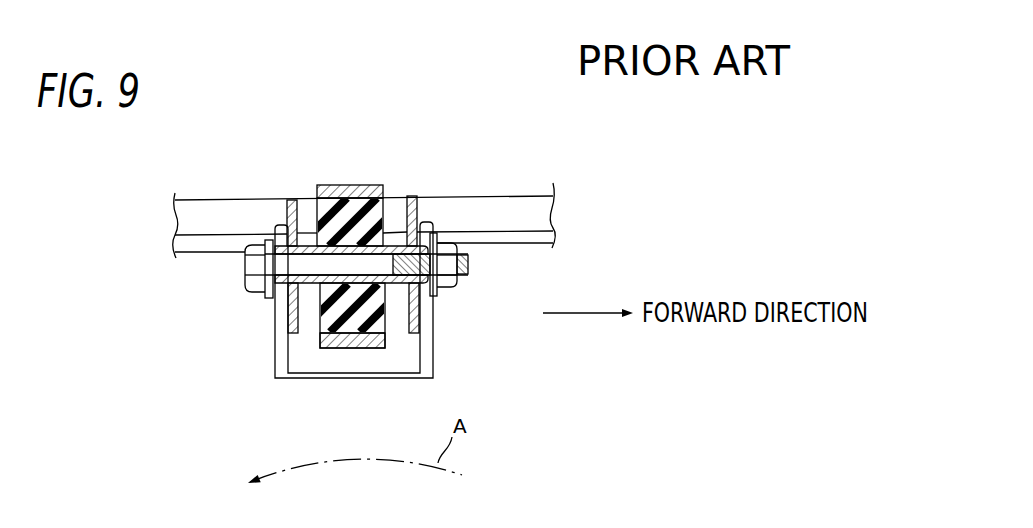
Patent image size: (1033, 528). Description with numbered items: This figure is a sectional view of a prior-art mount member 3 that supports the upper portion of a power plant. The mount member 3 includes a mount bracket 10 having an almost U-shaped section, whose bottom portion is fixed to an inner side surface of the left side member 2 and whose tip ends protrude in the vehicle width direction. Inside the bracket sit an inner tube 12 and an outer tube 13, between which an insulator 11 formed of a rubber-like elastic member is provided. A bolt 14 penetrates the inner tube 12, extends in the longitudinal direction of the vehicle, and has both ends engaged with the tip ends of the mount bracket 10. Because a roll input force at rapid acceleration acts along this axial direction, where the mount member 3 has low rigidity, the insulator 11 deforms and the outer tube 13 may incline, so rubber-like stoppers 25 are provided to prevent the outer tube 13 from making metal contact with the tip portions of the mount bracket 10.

The left side member 2 is at (512, 195).
The mount member 3 is at (347, 152).
The mount bracket 10 is at (433, 345).
The insulator 11 is at (322, 312).
The inner tube 12 is at (304, 233).
The outer tube 13 is at (368, 185).
The bolt 14 is at (245, 267).
The stoppers 25 is at (288, 312).